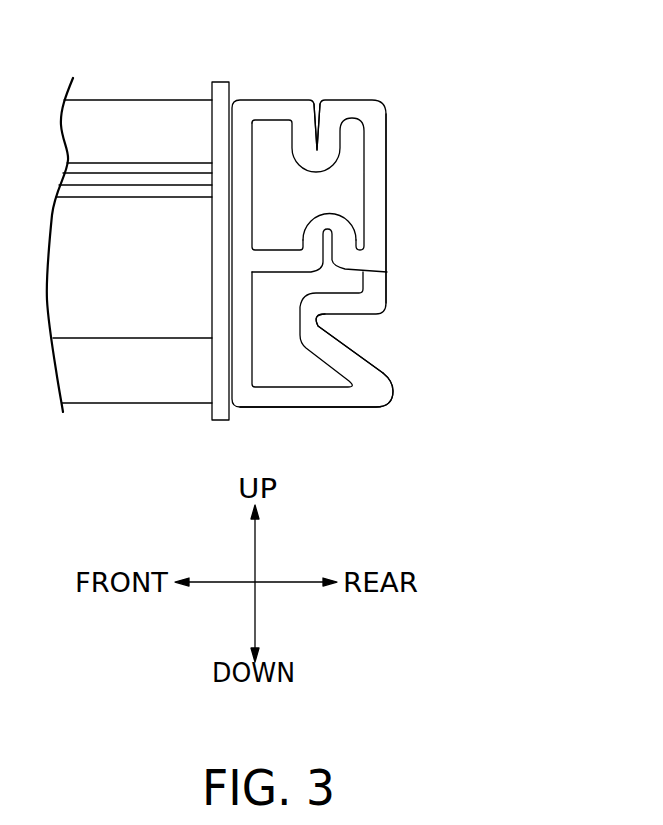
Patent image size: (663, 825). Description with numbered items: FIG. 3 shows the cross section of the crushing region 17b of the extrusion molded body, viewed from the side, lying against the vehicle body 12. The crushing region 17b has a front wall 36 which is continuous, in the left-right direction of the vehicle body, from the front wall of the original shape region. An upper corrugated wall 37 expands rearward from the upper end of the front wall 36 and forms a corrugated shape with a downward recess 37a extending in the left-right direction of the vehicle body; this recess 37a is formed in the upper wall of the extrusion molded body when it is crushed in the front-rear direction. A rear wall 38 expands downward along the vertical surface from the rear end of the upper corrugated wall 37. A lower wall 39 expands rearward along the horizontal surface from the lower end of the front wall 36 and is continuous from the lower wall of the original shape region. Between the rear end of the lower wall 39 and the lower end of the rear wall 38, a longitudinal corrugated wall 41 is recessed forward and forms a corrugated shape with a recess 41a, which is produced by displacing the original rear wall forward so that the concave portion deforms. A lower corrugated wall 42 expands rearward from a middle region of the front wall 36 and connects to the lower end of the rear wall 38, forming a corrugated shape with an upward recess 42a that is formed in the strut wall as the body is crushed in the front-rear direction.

The vehicle body panel 12 is at (155, 99).
The front wall 36 is at (228, 222).
The crushing region 17b is at (387, 89).
The upper corrugated wall 37 is at (255, 98).
The downward recess 37a is at (316, 99).
The rear wall 38 is at (388, 147).
The lower wall 39 is at (337, 409).
The longitudinal corrugated wall 41 is at (302, 318).
The recess 41a is at (318, 324).
The lower corrugated wall 42 is at (342, 225).
The upward recess 42a is at (333, 262).